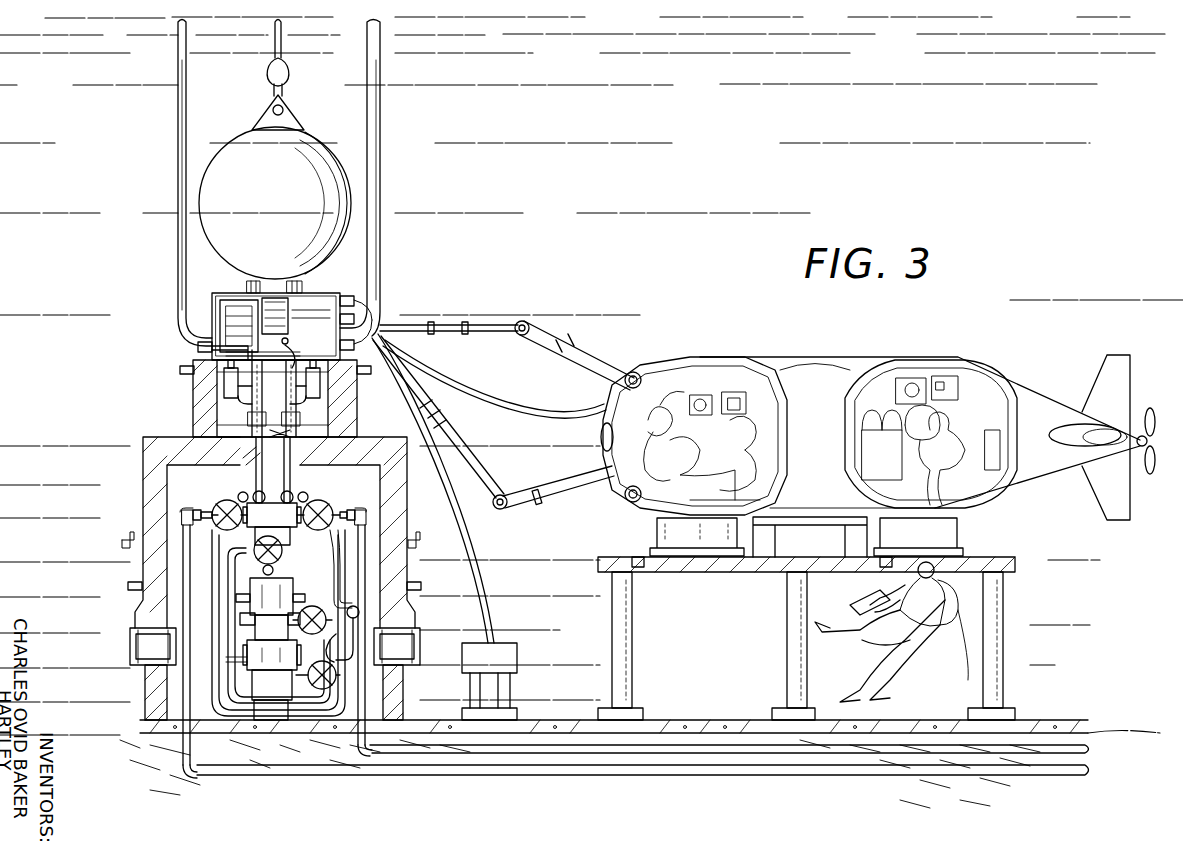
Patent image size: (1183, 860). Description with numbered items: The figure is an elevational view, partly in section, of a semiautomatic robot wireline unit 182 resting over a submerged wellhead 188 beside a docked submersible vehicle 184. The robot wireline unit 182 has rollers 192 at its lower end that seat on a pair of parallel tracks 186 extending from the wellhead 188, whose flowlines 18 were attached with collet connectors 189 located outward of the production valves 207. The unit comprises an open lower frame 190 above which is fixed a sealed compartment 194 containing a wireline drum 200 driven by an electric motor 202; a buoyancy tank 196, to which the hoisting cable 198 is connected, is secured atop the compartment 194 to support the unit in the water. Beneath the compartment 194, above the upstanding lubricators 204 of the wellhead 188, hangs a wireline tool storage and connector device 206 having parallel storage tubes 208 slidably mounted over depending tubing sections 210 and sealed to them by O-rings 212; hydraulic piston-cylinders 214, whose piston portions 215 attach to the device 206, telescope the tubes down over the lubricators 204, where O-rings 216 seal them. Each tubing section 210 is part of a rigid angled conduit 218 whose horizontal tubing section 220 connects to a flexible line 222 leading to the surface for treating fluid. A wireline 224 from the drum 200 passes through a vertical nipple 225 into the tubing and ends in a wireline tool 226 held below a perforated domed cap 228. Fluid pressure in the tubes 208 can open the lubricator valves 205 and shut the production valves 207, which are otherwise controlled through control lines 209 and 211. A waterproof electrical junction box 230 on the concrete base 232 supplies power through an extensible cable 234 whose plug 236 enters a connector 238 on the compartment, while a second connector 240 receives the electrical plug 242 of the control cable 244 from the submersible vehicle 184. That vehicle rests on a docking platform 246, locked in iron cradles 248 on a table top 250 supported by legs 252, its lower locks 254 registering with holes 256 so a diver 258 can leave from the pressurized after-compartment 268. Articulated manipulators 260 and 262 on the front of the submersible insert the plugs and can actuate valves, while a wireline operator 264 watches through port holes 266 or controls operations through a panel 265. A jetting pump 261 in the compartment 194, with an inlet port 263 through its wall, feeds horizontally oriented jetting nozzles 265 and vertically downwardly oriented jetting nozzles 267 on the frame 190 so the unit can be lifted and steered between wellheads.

The flowlines 18 is at (575, 775).
The robot wireline unit 182 is at (135, 432).
The submersible vehicle 184 is at (834, 396).
The tracks 186 is at (145, 686).
The wellhead 188 is at (300, 508).
The collet connectors 189 is at (214, 520).
The lower frame 190 is at (150, 518).
The rollers 192 is at (148, 645).
The sealed compartment 194 is at (336, 313).
The buoyancy tank 196 is at (296, 170).
The hoisting cable 198 is at (274, 46).
The wireline drum 200 is at (236, 300).
The electric motor 202 is at (220, 318).
The lubricators 204 is at (292, 478).
The lubricator valves 205 is at (238, 496).
The wireline tool storage and connector device 206 is at (246, 436).
The production valves 207 is at (222, 528).
The storage tubes 208 is at (195, 428).
The control lines 209 is at (206, 504).
The tubing sections 210 is at (238, 392).
The control lines 211 is at (216, 560).
The O-rings 212 is at (292, 355).
The hydraulic piston-cylinders 214 is at (224, 384).
The piston portions 215 is at (312, 392).
The O-rings 216 is at (248, 470).
The angled conduit 218 is at (226, 360).
The horizontal tubing sections 220 is at (214, 336).
The flexible lines 222 is at (178, 104).
The wireline 224 is at (272, 300).
The vertical nipple 225 is at (198, 346).
The wireline tool 226 is at (294, 438).
The perforated domed cap 228 is at (217, 408).
The electrical junction box 230 is at (518, 656).
The concrete base 232 is at (410, 722).
The extensible cable 234 is at (480, 582).
The plug 236 is at (354, 344).
The connector 238 is at (354, 318).
The second connector 240 is at (352, 300).
The electrical plug 242 is at (354, 300).
The control cable 244 is at (508, 390).
The docking platform 246 is at (1025, 546).
The iron cradles 248 is at (843, 538).
The table top 250 is at (1000, 556).
The legs 252 is at (632, 680).
The lower locks 254 is at (657, 530).
The holes 256 is at (680, 570).
The diver 258 is at (962, 664).
The articulated manipulator 260 is at (552, 476).
The jetting pump 261 is at (294, 330).
The articulated manipulator 262 is at (590, 358).
The inlet port 263 is at (289, 341).
The wireline operator 264 is at (670, 400).
The horizontally oriented jetting nozzles 265 is at (180, 370).
The port holes 266 is at (624, 388).
The vertically downwardly oriented jetting nozzles 267 is at (122, 542).
The after-compartment 268 is at (975, 400).